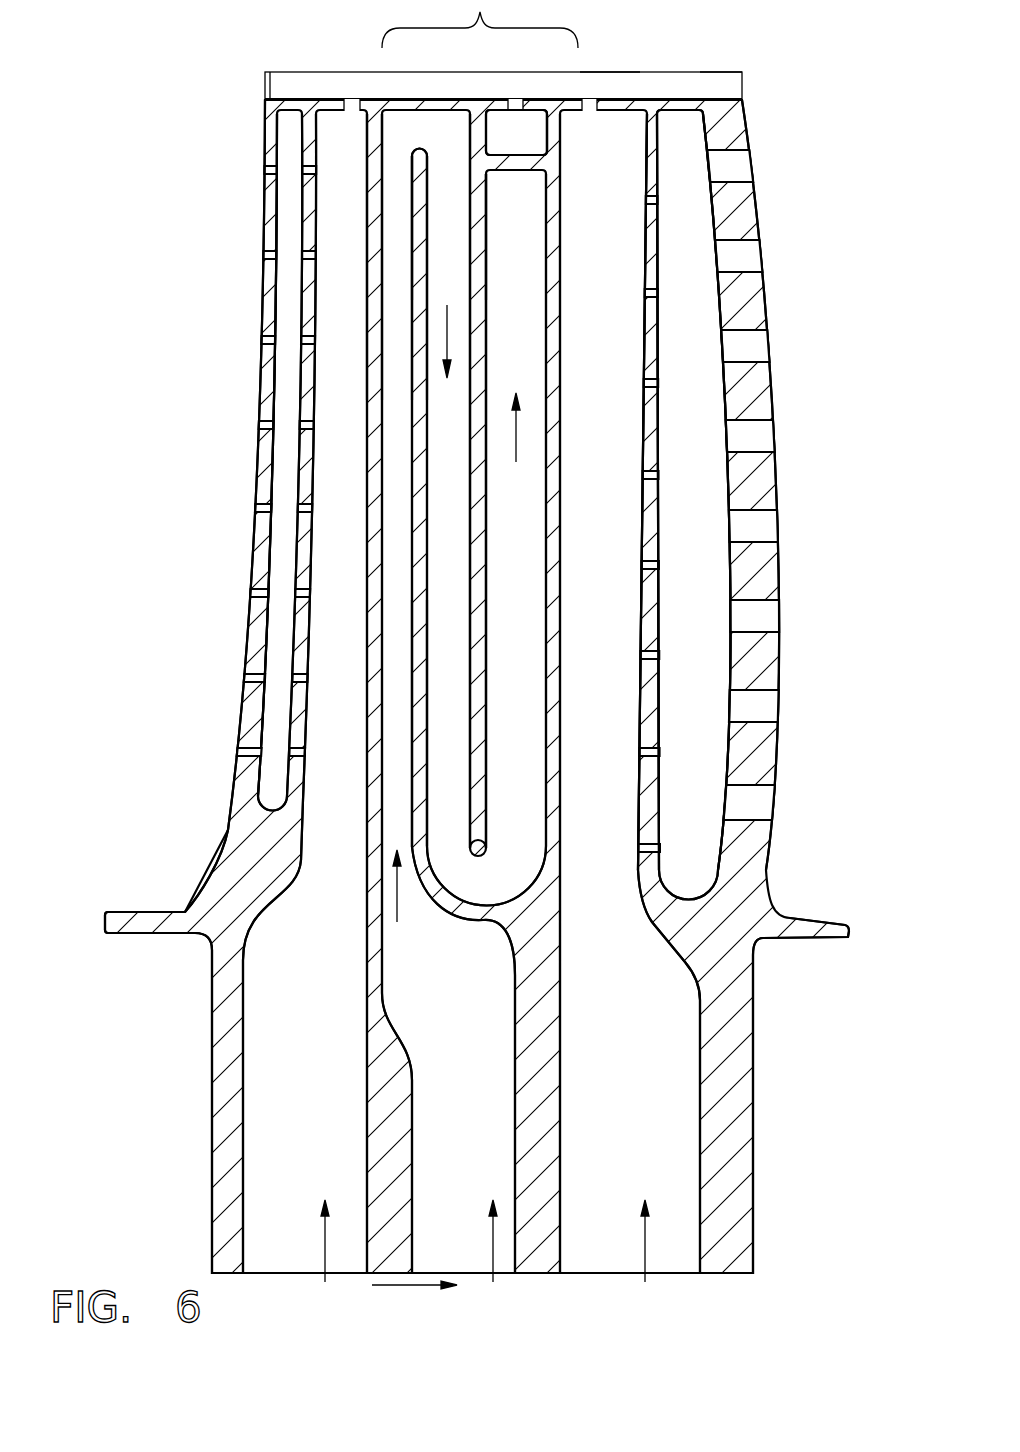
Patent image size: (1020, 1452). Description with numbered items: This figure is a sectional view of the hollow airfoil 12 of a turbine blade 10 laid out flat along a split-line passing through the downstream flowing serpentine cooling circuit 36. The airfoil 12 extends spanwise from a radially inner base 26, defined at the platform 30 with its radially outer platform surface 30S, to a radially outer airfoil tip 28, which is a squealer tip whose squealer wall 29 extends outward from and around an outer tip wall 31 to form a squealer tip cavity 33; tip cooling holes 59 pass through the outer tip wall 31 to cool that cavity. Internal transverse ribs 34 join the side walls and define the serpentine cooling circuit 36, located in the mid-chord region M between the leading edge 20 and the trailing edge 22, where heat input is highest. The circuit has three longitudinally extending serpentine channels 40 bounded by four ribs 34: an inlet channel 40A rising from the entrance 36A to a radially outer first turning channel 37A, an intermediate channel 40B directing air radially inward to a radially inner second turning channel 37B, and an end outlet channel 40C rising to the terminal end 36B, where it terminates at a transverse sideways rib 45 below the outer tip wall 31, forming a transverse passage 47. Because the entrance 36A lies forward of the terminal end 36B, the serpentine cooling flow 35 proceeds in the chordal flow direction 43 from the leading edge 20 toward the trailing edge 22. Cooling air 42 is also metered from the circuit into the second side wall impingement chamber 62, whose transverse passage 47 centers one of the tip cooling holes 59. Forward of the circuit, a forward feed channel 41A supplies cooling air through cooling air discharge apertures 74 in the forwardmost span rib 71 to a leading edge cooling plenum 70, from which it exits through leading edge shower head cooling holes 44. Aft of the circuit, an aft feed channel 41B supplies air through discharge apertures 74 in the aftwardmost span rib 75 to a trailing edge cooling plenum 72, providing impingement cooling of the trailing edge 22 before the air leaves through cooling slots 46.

The turbine blade 10 is at (777, 1308).
The hollow airfoil 12 is at (790, 187).
The leading edge 20 is at (258, 462).
The trailing edge 22 is at (782, 481).
The radially inner base 26 is at (188, 882).
The airfoil tip 28 is at (265, 128).
The squealer wall 29 is at (746, 86).
The platform 30 is at (115, 935).
The radially outer platform surface 30S is at (113, 912).
The outer tip wall 31 is at (700, 97).
The squealer tip cavity 33 is at (608, 72).
The internal transverse ribs 34 is at (478, 628).
The serpentine cooling flow 35 is at (398, 912).
The serpentine cooling circuit 36 is at (455, 450).
The entrance 36A is at (432, 1013).
The terminal end 36B is at (528, 208).
The radially outer first turning channel 37A is at (405, 143).
The radially inner second turning channel 37B is at (462, 888).
The serpentine channels 40 is at (435, 225).
The inlet channel 40A is at (395, 273).
The intermediate channel 40B is at (452, 285).
The end outlet channel 40C is at (492, 353).
The forward feed channel 41A is at (307, 858).
The aft feed channel 41B is at (577, 848).
The cooling air 42 is at (325, 1243).
The chordal flow direction 43 is at (405, 1287).
The leading edge shower head cooling holes 44 is at (250, 752).
The transverse sideways rib 45 is at (548, 172).
The cooling slots 46 is at (776, 447).
The transverse passage 47 is at (552, 146).
The tip cooling holes 59 is at (352, 98).
The second side wall impingement chamber 62 is at (500, 143).
The leading edge cooling plenum 70 is at (277, 633).
The forwardmost span rib 71 is at (303, 628).
The trailing edge cooling plenum 72 is at (682, 735).
The cooling air discharge apertures 74 is at (300, 752).
The aftwardmost span rib 75 is at (655, 525).
The mid-chord region M is at (480, 12).